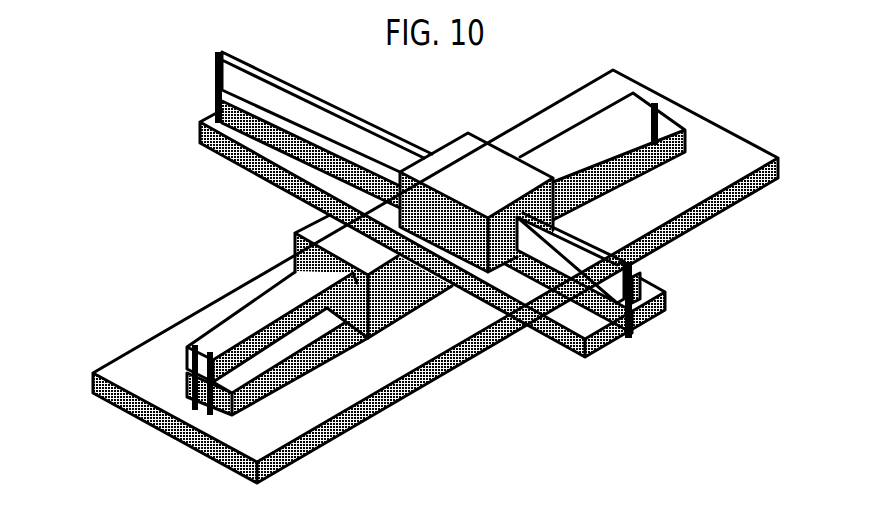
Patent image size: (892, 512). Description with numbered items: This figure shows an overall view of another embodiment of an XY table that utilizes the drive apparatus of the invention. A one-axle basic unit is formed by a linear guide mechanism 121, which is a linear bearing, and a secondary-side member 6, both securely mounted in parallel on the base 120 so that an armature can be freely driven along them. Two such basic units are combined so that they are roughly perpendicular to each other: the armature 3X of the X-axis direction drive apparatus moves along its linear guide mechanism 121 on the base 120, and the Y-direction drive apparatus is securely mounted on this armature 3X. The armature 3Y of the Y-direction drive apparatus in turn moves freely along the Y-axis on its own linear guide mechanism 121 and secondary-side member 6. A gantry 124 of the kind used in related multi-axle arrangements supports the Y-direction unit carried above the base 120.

The base 120 is at (360, 388).
The linear guide mechanism 121 is at (277, 394).
The gantry 124 is at (206, 124).
The secondary-side member 6 is at (332, 112).
The armature of the X-direction drive apparatus 3X is at (304, 232).
The armature of the Y-direction drive apparatus 3Y is at (458, 135).